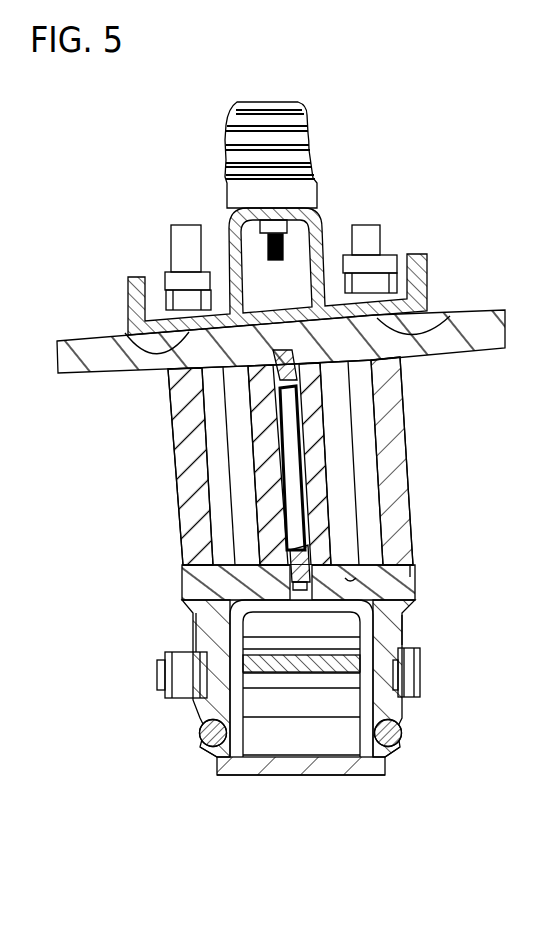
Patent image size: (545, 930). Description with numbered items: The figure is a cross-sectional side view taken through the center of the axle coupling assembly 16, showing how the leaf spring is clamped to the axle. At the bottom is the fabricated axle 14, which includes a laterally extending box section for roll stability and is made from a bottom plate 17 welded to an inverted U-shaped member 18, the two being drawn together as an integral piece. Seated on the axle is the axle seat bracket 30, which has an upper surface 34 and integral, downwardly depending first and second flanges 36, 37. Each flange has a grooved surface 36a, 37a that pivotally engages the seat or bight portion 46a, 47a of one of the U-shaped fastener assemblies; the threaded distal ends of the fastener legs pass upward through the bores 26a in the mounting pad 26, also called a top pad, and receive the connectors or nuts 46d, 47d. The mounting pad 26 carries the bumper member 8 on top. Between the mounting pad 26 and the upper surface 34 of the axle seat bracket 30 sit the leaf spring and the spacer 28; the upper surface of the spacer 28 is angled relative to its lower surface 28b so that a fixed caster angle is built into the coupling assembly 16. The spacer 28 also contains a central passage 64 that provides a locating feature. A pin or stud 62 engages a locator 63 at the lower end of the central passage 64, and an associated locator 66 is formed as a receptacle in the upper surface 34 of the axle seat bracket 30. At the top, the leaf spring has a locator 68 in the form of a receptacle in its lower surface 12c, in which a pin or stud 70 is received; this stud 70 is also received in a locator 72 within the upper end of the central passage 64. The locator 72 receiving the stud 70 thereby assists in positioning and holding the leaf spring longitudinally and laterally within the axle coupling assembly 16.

The bumper member 8 is at (273, 100).
The lower surface 12c is at (100, 374).
The fabricated axle 14 is at (371, 790).
The axle coupling assembly 16 is at (166, 530).
The bottom plate 17 is at (288, 778).
The inverted U-shaped member 18 is at (207, 633).
The mounting pad 26 is at (321, 224).
The bores 26a is at (443, 316).
The spacer 28 is at (313, 458).
The lower surface 28b is at (205, 571).
The axle seat bracket 30 is at (418, 645).
The upper surface 34 is at (410, 573).
The first flange 36 is at (418, 645).
The grooved surface 36a is at (403, 738).
The second flange 37 is at (190, 594).
The grooved surface 37a is at (199, 740).
The bight portion 46a is at (398, 748).
The connector 46d is at (378, 272).
The bight portion 47a is at (202, 750).
The connector 47d is at (173, 283).
The pin 62 is at (308, 562).
The locator 63 is at (352, 578).
The central passage 64 is at (300, 467).
The locator 66 is at (333, 593).
The locator 68 is at (272, 355).
The pin 70 is at (278, 392).
The locator 72 is at (297, 406).